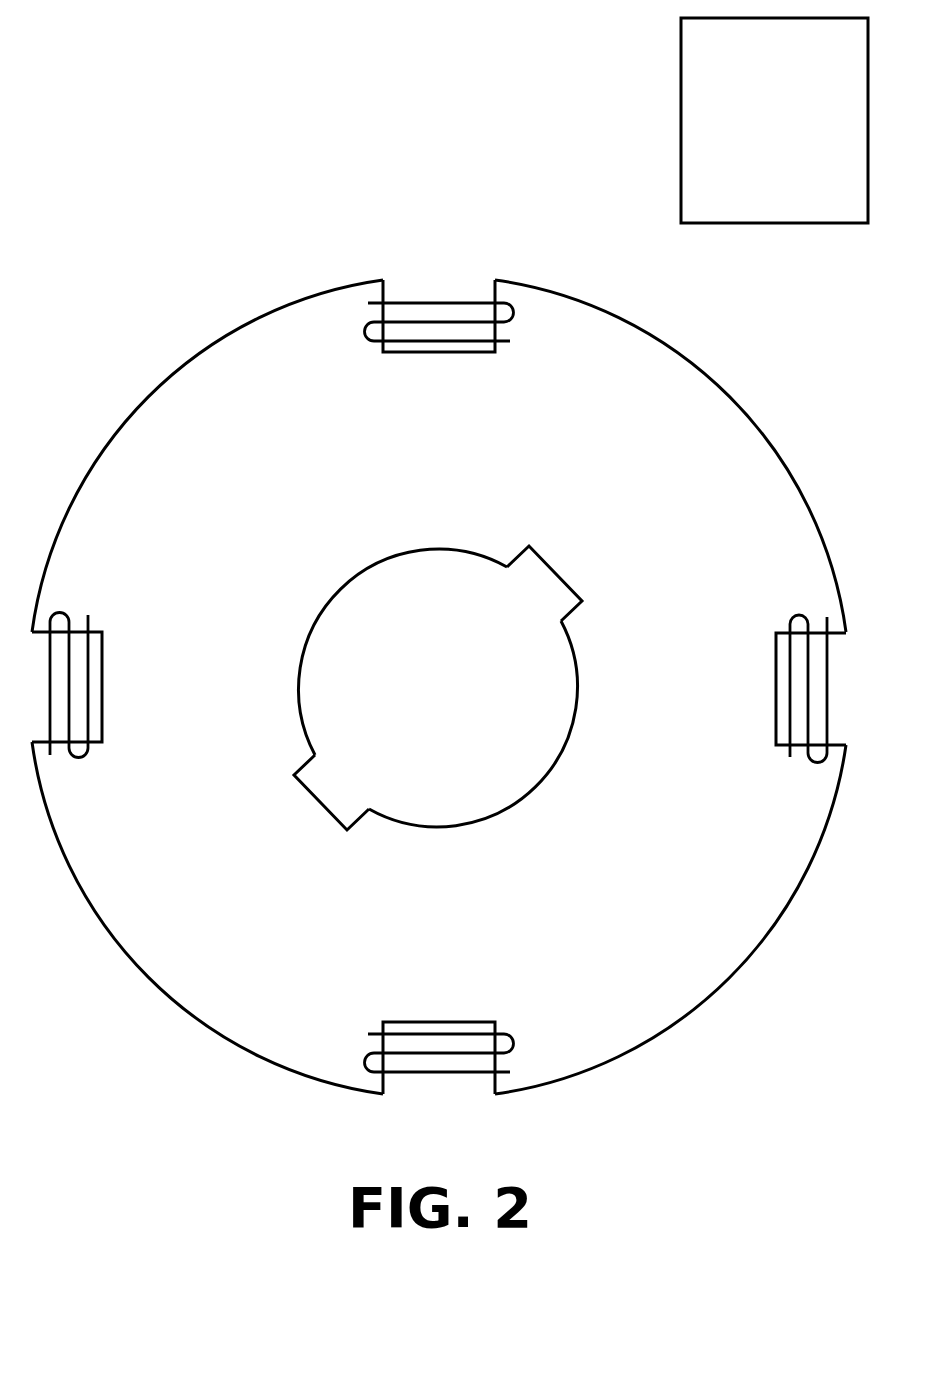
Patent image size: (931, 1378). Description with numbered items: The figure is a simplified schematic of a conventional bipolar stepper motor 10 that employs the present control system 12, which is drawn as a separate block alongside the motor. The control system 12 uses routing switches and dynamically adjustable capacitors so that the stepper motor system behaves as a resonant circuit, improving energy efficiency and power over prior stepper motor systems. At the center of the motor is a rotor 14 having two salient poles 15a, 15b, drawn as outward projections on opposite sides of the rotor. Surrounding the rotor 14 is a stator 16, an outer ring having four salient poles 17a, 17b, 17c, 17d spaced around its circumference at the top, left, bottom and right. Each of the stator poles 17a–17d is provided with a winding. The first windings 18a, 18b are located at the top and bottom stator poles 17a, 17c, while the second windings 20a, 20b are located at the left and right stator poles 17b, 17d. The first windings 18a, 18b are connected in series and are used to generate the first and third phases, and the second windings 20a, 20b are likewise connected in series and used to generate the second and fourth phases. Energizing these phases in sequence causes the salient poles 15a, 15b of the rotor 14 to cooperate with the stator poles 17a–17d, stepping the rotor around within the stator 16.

The stepper motor 10 is at (232, 224).
The control system 12 is at (795, 130).
The rotor 14 is at (318, 613).
The salient pole 15a is at (313, 803).
The salient pole 15b is at (558, 568).
The stator 16 is at (707, 375).
The stator pole 17a is at (432, 353).
The stator pole 17b is at (102, 687).
The stator pole 17c is at (432, 1020).
The stator pole 17d is at (776, 685).
The first winding 18a is at (363, 330).
The first winding 18b is at (513, 1045).
The second winding 20a is at (78, 760).
The second winding 20b is at (817, 762).